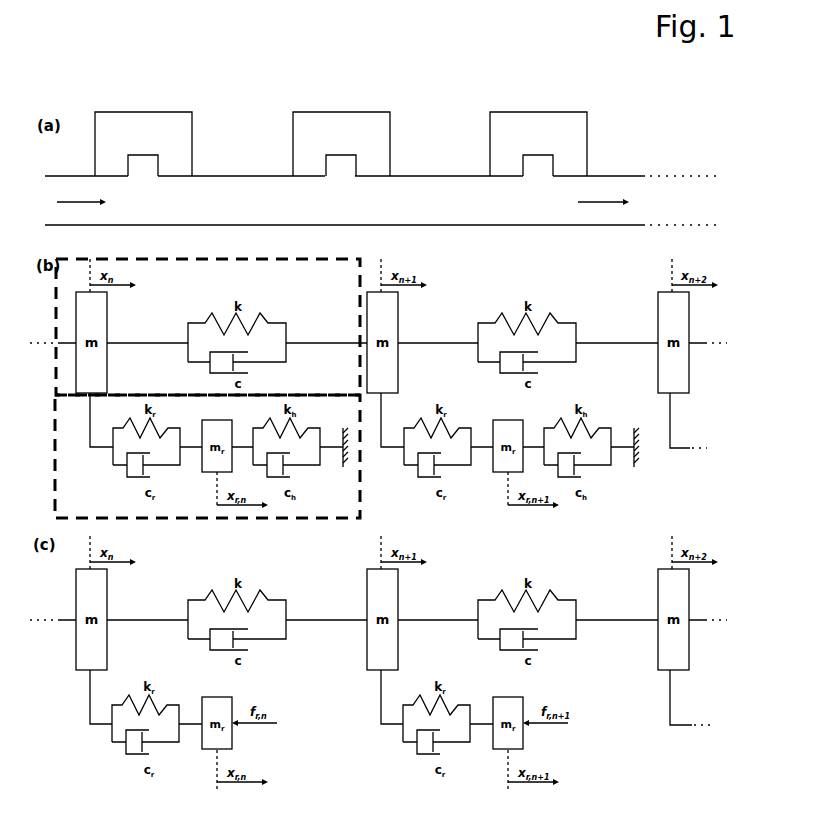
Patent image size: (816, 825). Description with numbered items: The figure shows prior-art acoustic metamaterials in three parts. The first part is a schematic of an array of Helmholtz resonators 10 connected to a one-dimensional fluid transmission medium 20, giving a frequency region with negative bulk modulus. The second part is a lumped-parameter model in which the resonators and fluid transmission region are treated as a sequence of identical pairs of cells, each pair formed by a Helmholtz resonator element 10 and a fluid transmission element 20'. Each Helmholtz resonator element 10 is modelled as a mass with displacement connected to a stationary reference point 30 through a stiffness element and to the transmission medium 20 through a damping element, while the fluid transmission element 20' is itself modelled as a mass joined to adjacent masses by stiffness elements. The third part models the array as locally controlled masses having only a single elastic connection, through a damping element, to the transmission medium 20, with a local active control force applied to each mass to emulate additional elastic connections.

The Helmholtz resonator 10 is at (532, 130).
The one-dimensional fluid transmission medium 20 is at (382, 200).
The fluid transmission element 20' is at (208, 327).
The stationary reference point 30 is at (347, 447).